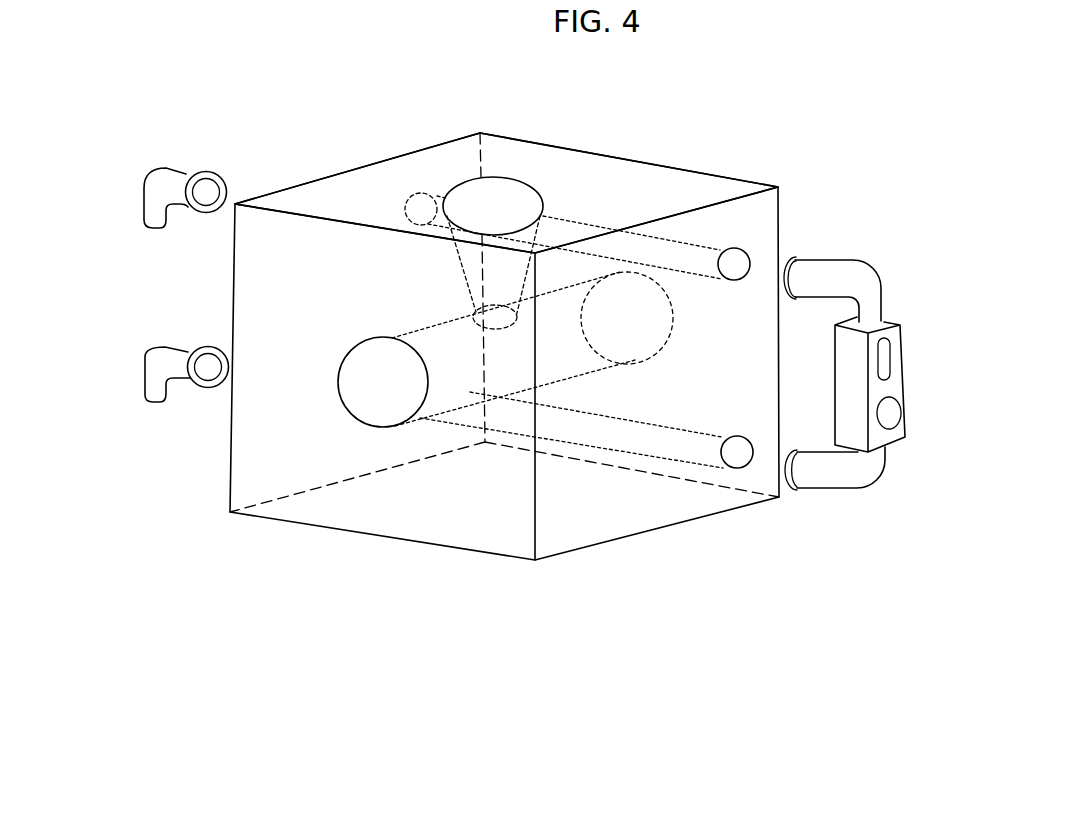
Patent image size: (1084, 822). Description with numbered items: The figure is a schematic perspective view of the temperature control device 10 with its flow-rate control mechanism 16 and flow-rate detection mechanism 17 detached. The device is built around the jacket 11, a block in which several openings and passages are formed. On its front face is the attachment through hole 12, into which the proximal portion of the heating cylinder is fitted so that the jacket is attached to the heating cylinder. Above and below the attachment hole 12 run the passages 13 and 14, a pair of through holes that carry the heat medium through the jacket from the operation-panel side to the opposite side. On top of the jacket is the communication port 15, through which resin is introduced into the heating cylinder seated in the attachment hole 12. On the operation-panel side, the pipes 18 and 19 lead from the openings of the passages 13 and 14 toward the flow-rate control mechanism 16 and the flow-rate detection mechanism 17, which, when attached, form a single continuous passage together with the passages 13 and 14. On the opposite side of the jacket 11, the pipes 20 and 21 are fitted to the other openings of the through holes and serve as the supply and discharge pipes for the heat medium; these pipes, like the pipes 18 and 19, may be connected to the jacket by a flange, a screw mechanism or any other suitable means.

The temperature control device 10 is at (527, 606).
The jacket 11 is at (582, 194).
The attachment through hole 12 is at (380, 396).
The passage 13 is at (633, 254).
The passage 14 is at (661, 432).
The communication port 15 is at (493, 200).
The flow-rate control mechanism 16 is at (893, 408).
The flow-rate detection mechanism 17 is at (880, 360).
The pipe 18 is at (843, 279).
The pipe 19 is at (832, 468).
The supply pipe 20 is at (175, 190).
The discharge pipe 21 is at (172, 362).